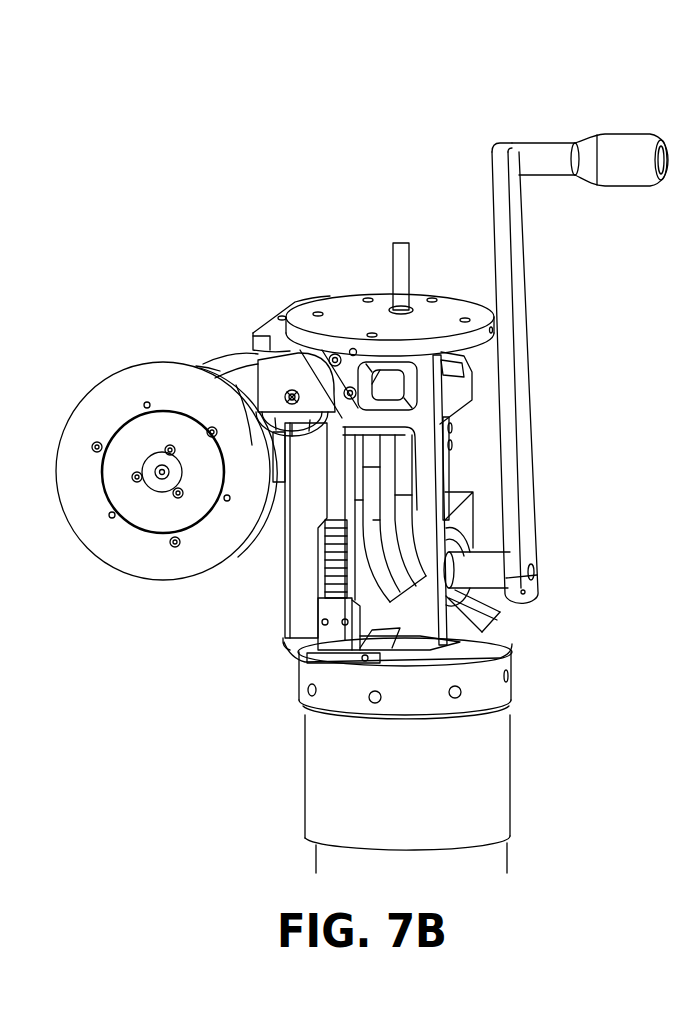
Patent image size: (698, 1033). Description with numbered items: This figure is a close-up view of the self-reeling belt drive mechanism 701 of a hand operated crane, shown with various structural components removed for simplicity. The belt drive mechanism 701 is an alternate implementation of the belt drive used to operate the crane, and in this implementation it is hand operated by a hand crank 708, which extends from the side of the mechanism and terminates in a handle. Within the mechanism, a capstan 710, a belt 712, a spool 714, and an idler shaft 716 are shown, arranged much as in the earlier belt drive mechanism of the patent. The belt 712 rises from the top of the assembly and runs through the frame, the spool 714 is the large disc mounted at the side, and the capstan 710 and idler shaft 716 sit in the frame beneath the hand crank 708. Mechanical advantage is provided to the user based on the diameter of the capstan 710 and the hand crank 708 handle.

The belt drive mechanism 701 is at (221, 200).
The hand crank 708 is at (532, 150).
The capstan 710 is at (455, 570).
The belt 712 is at (393, 277).
The spool 714 is at (147, 378).
The idler shaft 716 is at (453, 455).